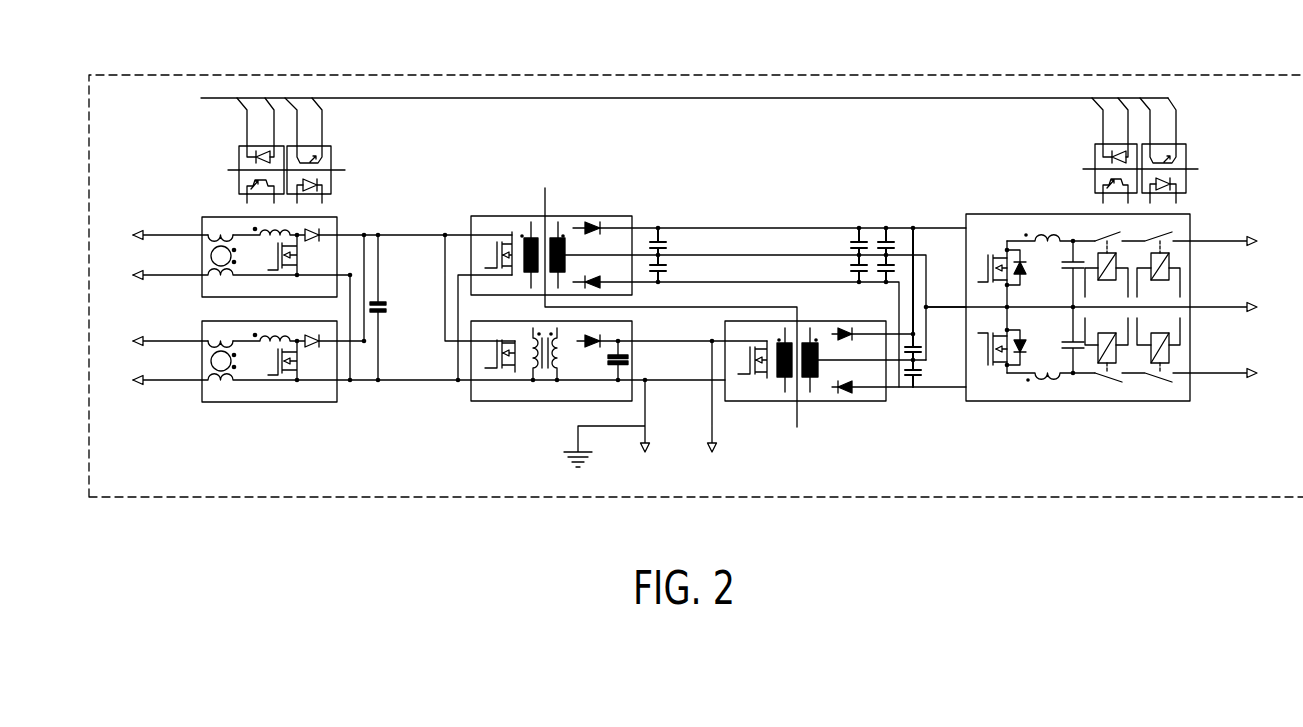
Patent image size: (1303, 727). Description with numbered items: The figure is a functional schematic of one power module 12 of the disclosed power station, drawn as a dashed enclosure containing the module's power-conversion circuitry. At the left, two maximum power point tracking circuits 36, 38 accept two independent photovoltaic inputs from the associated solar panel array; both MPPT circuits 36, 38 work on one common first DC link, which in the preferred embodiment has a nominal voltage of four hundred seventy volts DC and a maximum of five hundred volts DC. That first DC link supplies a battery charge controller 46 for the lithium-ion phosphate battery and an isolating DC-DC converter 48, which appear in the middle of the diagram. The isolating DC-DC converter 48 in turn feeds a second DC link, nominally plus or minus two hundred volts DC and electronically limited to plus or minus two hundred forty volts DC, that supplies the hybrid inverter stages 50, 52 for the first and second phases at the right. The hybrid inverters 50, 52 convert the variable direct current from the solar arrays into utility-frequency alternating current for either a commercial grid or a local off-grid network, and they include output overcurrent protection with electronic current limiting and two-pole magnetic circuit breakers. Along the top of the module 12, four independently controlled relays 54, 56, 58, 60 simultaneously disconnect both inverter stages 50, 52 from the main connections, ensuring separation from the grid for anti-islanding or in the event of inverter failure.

The power module 12 is at (604, 73).
The maximum power point tracking circuit 36 is at (215, 218).
The maximum power point tracking circuit 38 is at (317, 401).
The battery charge controller 46 is at (488, 401).
The isolating DC-DC converter 48 is at (512, 216).
The hybrid inverter 50 is at (985, 214).
The hybrid inverter 52 is at (1020, 401).
The relay 54 is at (262, 121).
The relay 56 is at (1115, 118).
The relay 58 is at (315, 130).
The relay 60 is at (1167, 118).